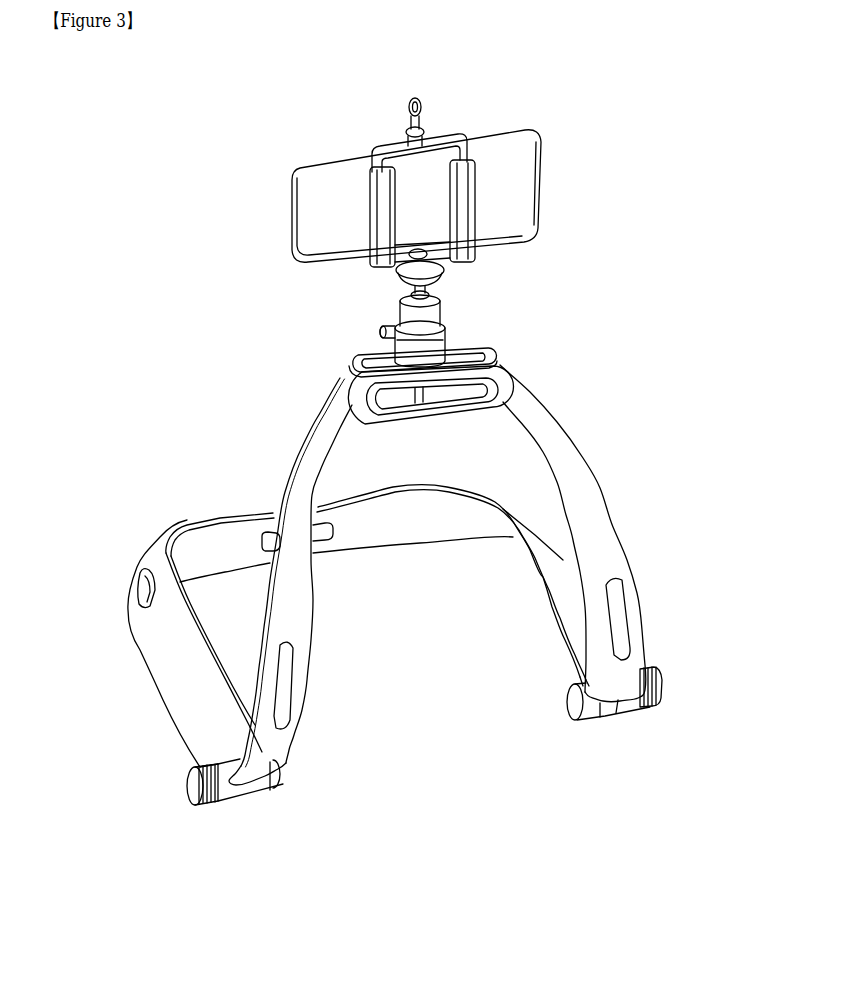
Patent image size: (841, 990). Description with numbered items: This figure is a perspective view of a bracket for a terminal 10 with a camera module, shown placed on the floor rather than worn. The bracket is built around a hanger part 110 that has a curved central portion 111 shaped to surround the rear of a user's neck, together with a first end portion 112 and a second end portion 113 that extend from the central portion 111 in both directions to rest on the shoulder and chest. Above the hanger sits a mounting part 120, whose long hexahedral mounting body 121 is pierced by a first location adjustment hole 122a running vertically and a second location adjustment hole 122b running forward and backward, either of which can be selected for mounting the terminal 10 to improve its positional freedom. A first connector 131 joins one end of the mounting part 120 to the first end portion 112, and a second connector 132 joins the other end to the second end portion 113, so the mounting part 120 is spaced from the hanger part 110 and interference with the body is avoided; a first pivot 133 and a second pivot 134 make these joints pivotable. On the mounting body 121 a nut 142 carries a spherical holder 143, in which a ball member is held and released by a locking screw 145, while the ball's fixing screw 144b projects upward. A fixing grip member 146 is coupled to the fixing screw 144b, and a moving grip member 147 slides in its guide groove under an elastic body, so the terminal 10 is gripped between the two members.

The terminal 10 is at (493, 135).
The hanger part 110 is at (313, 626).
The central portion 111 is at (353, 557).
The first end portion 112 is at (165, 708).
The second end portion 113 is at (545, 612).
The mounting part 120 is at (427, 379).
The mounting body 121 is at (447, 350).
The first location adjustment hole 122a is at (512, 380).
The second location adjustment hole 122b is at (354, 358).
The first connector 131 is at (285, 470).
The second connector 132 is at (605, 497).
The first pivot 133 is at (284, 790).
The second pivot 134 is at (657, 708).
The nut 142 is at (382, 330).
The spherical holder 143 is at (442, 316).
The fixing screw 144b is at (437, 290).
The locking screw 145 is at (395, 322).
The fixing grip member 146 is at (470, 196).
The moving grip member 147 is at (432, 136).